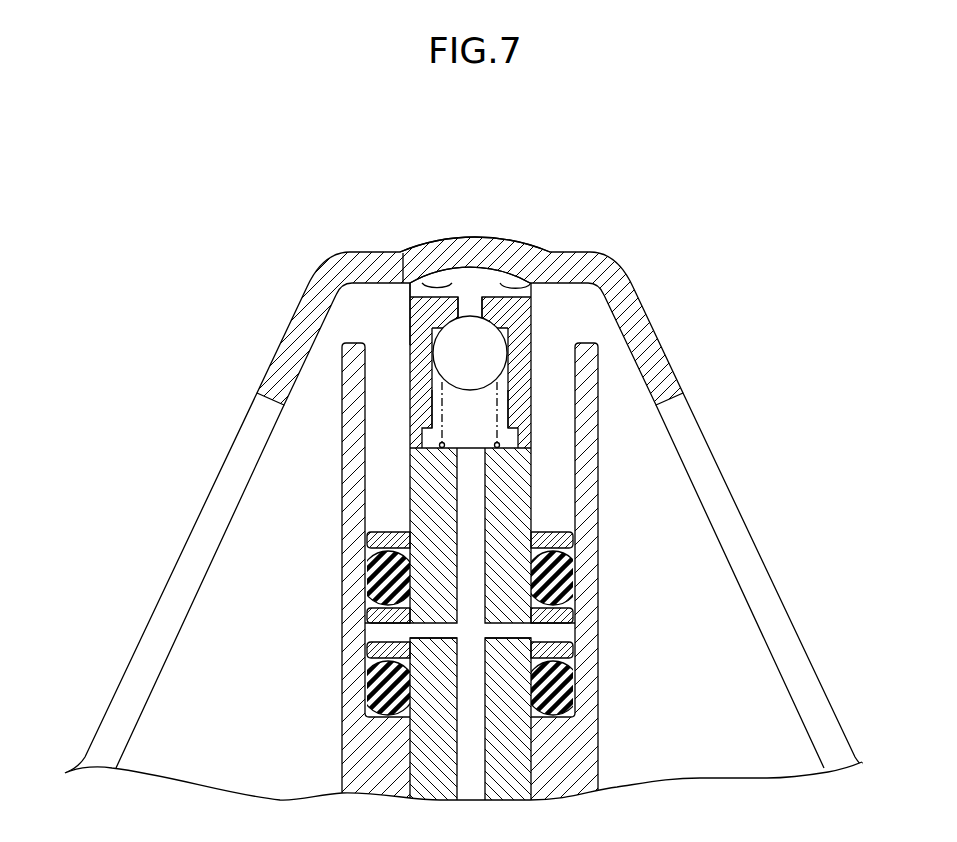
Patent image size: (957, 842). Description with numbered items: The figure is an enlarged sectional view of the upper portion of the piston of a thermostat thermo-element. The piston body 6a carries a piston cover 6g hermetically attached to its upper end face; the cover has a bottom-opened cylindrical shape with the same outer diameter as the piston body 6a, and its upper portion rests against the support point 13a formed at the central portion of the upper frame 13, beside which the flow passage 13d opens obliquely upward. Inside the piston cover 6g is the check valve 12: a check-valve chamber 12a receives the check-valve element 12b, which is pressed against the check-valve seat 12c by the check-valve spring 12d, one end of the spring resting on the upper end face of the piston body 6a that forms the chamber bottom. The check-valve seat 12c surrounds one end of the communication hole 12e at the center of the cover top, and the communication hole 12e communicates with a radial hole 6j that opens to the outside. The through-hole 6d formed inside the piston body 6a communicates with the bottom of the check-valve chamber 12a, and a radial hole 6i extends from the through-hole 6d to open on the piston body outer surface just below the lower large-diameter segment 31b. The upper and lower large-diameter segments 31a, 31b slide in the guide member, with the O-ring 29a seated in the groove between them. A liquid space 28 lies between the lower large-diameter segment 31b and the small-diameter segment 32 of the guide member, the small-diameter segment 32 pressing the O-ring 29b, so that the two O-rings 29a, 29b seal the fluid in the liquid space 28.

The piston body 6a is at (432, 755).
The through-hole 6d is at (477, 732).
The piston cover 6g is at (425, 310).
The radial hole 6i is at (433, 632).
The radial hole 6j is at (403, 253).
The check valve 12 is at (427, 352).
The check-valve chamber 12a is at (473, 407).
The check-valve element 12b is at (475, 352).
The check-valve seat 12c is at (472, 303).
The check-valve spring 12d is at (405, 380).
The communication hole 12e is at (512, 275).
The upper frame 13 is at (491, 233).
The support point 13a is at (466, 237).
The flow passage 13d is at (680, 422).
The liquid space 28 is at (555, 633).
The O-ring 29a is at (383, 578).
The O-ring 29b is at (383, 685).
The upper large-diameter segment 31a is at (385, 535).
The lower large-diameter segment 31b is at (378, 612).
The small-diameter segment 32 is at (560, 650).